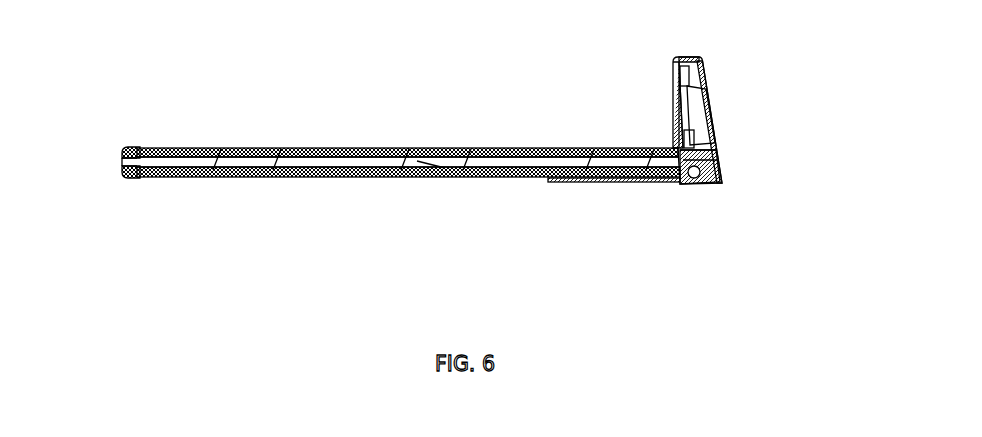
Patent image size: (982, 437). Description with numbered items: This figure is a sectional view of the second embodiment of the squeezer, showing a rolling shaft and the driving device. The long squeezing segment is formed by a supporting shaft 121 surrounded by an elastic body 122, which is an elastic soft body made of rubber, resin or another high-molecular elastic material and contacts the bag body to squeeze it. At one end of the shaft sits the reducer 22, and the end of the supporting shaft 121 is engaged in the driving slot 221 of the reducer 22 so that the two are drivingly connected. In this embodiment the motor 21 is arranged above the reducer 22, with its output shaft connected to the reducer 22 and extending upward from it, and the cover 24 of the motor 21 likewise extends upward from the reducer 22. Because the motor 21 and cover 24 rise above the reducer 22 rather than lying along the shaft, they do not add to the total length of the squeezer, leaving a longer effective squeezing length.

The motor 21 is at (753, 153).
The cover 24 is at (713, 107).
The reducer 22 is at (746, 214).
The driving slot 221 is at (707, 187).
The supporting shaft 121 is at (450, 177).
The elastic body 122 is at (305, 177).